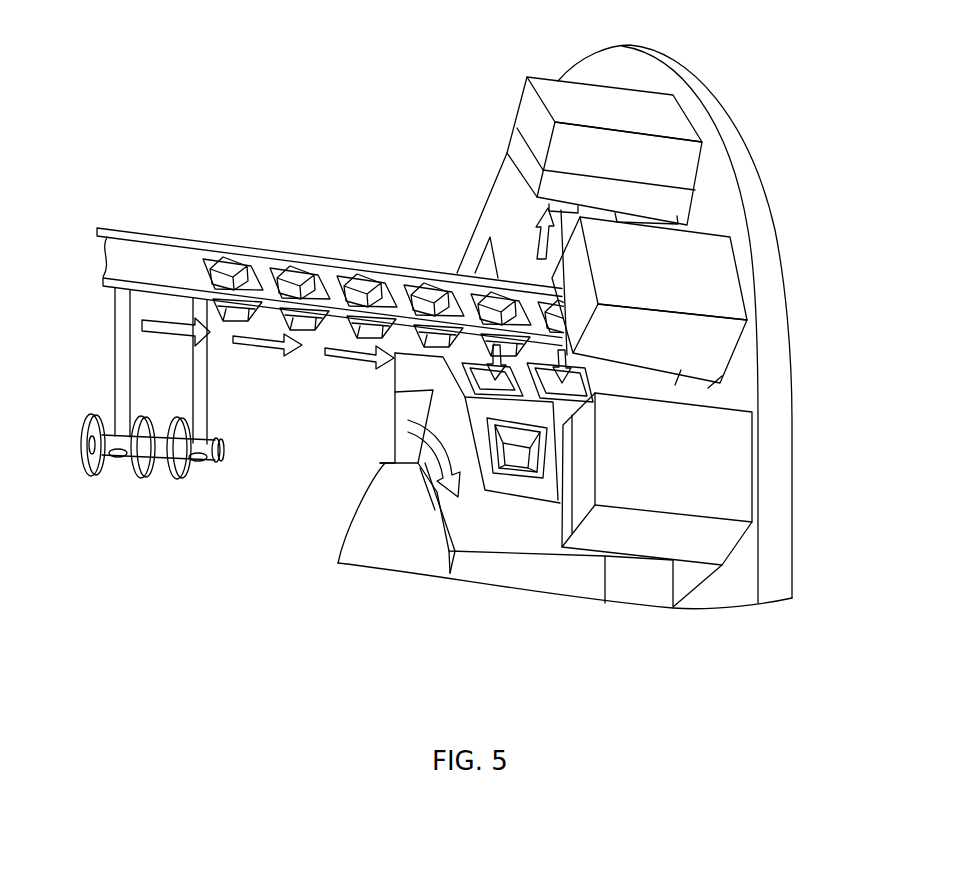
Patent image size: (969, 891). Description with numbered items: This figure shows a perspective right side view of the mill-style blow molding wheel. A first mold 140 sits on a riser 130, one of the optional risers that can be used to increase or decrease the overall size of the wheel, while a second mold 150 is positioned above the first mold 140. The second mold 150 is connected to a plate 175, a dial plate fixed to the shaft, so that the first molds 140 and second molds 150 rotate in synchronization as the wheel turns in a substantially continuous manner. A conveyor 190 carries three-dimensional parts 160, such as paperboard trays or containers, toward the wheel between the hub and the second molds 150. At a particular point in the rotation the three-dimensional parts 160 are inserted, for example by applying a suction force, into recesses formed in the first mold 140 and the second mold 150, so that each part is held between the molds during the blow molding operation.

The plate 175 is at (600, 69).
The conveyor 190 is at (162, 253).
The three-dimensional parts 160 is at (230, 315).
The second molds 150 is at (713, 368).
The first molds 140 is at (497, 500).
The risers 130 is at (453, 520).